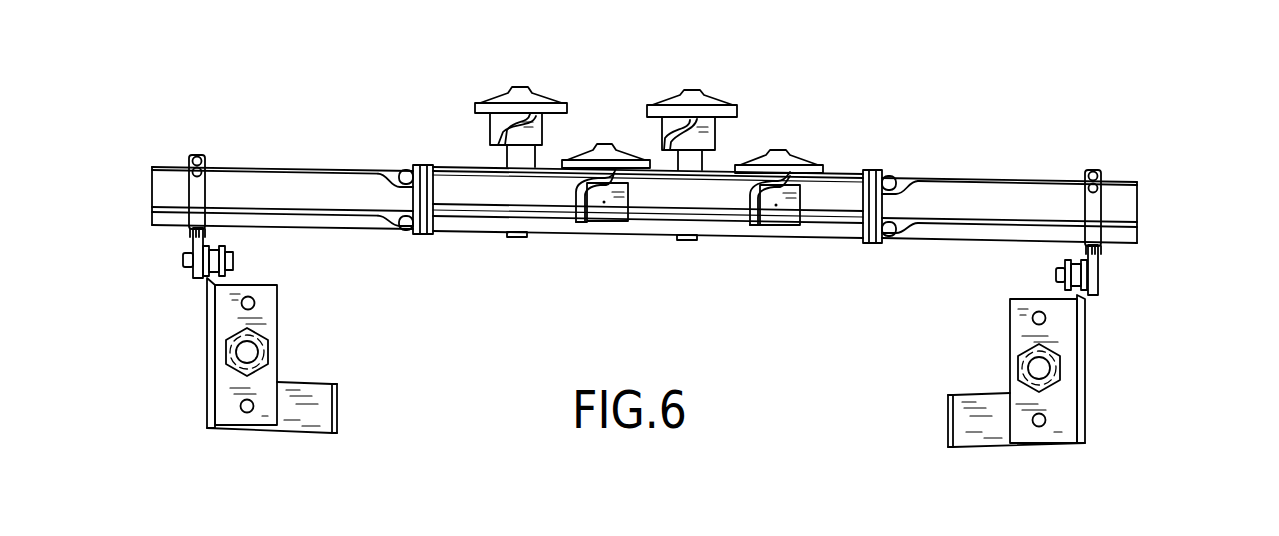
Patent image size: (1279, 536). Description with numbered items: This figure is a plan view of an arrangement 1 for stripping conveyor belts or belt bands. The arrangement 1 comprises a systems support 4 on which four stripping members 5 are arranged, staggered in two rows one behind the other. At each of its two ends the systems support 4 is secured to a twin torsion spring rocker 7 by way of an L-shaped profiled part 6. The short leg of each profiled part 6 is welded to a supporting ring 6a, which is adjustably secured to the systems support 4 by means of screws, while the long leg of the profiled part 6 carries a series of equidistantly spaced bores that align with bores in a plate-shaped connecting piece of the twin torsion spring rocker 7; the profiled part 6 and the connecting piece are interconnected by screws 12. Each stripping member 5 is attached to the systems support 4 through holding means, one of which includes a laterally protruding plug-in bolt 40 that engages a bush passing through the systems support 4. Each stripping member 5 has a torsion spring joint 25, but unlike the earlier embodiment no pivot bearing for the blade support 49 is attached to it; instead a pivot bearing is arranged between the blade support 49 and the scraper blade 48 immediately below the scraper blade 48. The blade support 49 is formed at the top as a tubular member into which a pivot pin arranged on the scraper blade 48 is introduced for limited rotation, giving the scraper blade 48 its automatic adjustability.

The arrangement 1 is at (935, 138).
The systems support 4 is at (460, 213).
The stripping member 5 is at (472, 131).
The L-shaped profiled part 6 is at (198, 278).
The supporting ring 6a is at (194, 190).
The twin torsion spring rocker 7 is at (347, 403).
The screw 12 is at (182, 258).
The torsion spring joint 25 is at (542, 158).
The plug-in bolt 40 is at (675, 158).
The scraper blade 48 is at (724, 108).
The blade support 49 is at (658, 129).